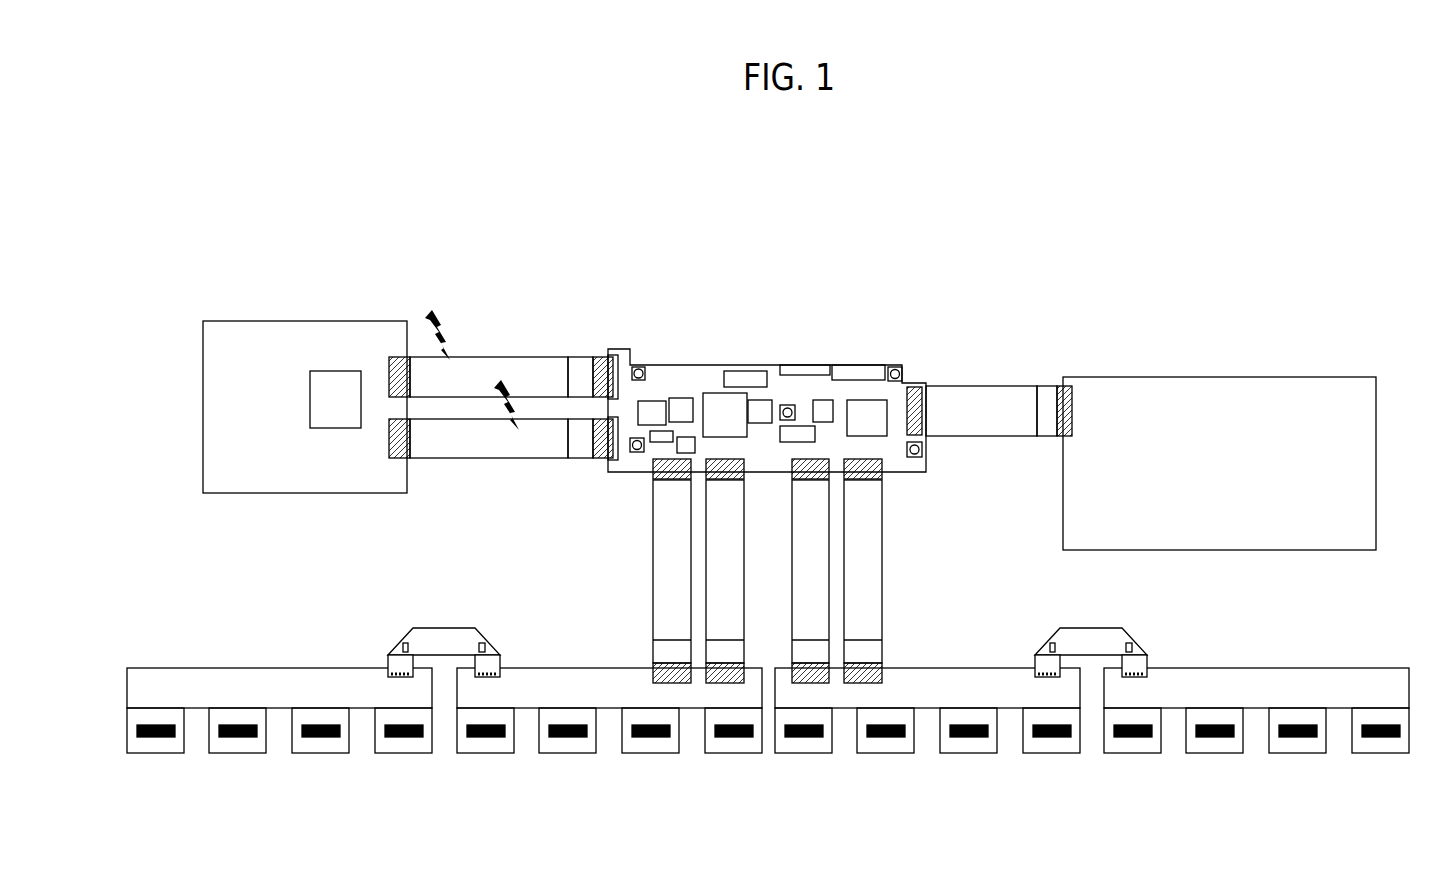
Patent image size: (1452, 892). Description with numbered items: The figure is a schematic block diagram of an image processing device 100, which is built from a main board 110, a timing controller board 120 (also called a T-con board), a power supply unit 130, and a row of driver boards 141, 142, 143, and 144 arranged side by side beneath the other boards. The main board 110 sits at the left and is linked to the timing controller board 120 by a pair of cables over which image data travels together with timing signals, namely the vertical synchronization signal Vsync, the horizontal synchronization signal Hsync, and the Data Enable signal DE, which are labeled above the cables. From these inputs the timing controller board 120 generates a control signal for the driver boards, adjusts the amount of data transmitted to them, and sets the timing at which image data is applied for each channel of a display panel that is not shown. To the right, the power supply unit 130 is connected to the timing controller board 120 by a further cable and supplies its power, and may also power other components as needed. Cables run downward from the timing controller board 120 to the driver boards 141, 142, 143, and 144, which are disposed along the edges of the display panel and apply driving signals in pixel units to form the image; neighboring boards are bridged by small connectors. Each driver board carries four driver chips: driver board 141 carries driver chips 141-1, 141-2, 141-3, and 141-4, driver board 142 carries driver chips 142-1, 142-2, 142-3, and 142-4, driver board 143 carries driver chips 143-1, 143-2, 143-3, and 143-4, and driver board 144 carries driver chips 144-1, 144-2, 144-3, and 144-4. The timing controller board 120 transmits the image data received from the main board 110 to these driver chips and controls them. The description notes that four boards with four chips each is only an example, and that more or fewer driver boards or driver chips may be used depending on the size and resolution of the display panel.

The image processing device 100 is at (205, 232).
The main board 110 is at (280, 321).
The timing controller board 120 is at (689, 365).
The power supply unit 130 is at (1223, 377).
The driver board 141 is at (268, 668).
The driver board 142 is at (599, 668).
The driver board 143 is at (974, 668).
The driver board 144 is at (1245, 668).
The driver chip 141-1 is at (156, 753).
The driver chip 141-2 is at (238, 753).
The driver chip 141-3 is at (320, 753).
The driver chip 141-4 is at (404, 753).
The driver chip 142-1 is at (486, 753).
The driver chip 142-2 is at (568, 753).
The driver chip 142-3 is at (650, 753).
The driver chip 142-4 is at (734, 753).
The driver chip 143-1 is at (804, 753).
The driver chip 143-2 is at (886, 753).
The driver chip 143-3 is at (968, 753).
The driver chip 143-4 is at (1052, 753).
The driver chip 144-1 is at (1132, 753).
The driver chip 144-2 is at (1214, 753).
The driver chip 144-3 is at (1298, 753).
The driver chip 144-4 is at (1380, 753).